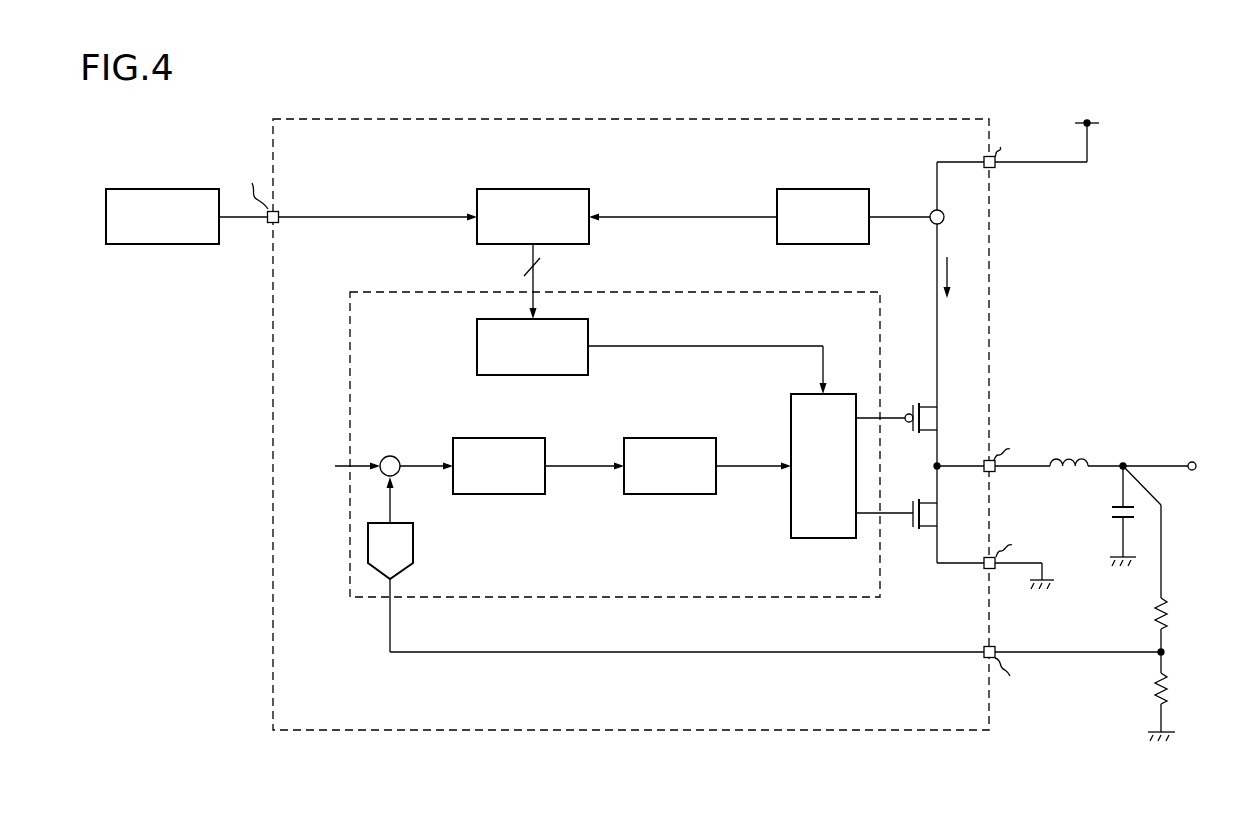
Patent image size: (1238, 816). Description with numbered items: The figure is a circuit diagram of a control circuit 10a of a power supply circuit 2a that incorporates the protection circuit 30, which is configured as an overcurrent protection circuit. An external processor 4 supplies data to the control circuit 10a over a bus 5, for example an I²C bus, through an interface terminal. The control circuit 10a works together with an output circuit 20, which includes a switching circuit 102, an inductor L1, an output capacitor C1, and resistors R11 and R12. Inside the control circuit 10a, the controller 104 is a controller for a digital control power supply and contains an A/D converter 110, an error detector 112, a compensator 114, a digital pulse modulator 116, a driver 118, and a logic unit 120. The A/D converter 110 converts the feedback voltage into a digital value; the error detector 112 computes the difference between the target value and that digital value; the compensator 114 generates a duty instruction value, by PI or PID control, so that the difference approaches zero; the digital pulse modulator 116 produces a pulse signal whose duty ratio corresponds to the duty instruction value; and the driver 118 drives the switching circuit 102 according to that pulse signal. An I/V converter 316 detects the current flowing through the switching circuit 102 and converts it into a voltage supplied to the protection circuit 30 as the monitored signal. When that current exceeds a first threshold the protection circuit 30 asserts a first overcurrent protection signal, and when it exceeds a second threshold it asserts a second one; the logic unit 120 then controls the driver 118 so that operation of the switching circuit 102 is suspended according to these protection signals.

The power supply circuit 2a is at (1180, 78).
The external processor 4 is at (152, 189).
The bus 5 is at (242, 222).
The control circuit 10a is at (622, 731).
The protection circuit 30 is at (549, 189).
The I/V converter 316 is at (826, 189).
The controller 104 is at (608, 597).
The logic unit 120 is at (477, 345).
The error detector 112 is at (391, 455).
The compensator 114 is at (506, 438).
The digital pulse modulator 116 is at (676, 438).
The driver 118 is at (830, 540).
The A/D converter 110 is at (413, 545).
The switching circuit 102 is at (900, 571).
The output circuit 20 is at (1064, 608).
The inductor L1 is at (1068, 456).
The output capacitor C1 is at (1110, 518).
The resistor R11 is at (1190, 613).
The resistor R12 is at (1190, 688).